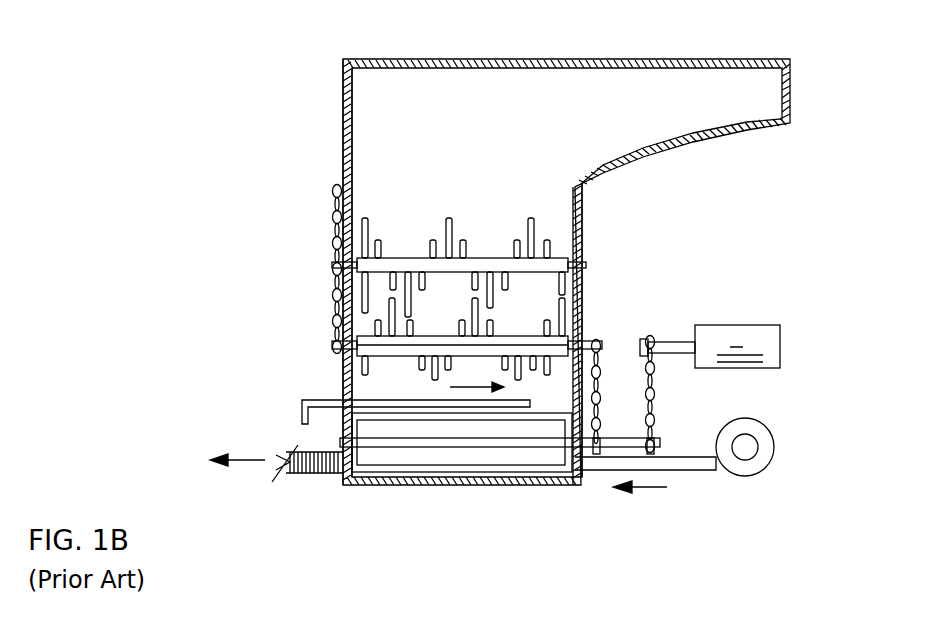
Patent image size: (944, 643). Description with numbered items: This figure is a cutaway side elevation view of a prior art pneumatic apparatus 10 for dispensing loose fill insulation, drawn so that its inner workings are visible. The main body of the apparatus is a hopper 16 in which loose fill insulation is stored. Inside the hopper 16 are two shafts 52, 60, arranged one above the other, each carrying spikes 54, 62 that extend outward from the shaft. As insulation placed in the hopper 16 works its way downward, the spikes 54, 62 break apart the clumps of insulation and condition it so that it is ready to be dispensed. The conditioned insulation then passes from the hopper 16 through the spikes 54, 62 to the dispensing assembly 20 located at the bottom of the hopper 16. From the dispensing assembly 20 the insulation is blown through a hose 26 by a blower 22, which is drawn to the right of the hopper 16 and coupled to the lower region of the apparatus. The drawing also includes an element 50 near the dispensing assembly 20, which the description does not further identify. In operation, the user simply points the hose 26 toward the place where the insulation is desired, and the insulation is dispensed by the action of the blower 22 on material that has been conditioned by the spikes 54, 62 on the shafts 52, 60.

The pneumatic apparatus 10 is at (322, 102).
The hopper 16 is at (518, 124).
The dispensing assembly 20 is at (531, 430).
The blower 22 is at (771, 430).
The hose 26 is at (321, 474).
The plate 50 is at (343, 398).
The shaft 52 is at (563, 338).
The spikes 54 is at (348, 373).
The shaft 60 is at (563, 262).
The spikes 62 is at (362, 247).